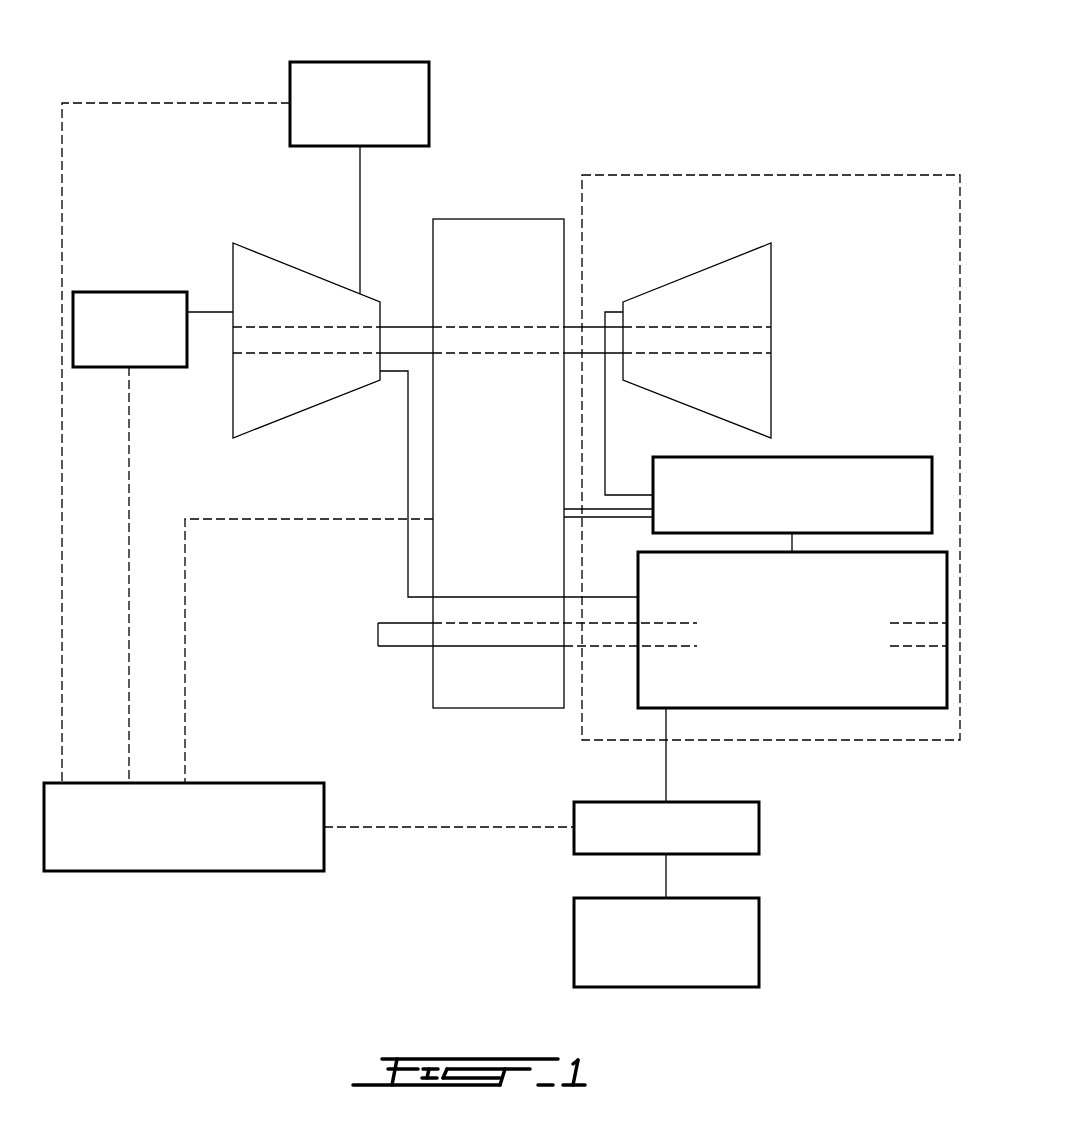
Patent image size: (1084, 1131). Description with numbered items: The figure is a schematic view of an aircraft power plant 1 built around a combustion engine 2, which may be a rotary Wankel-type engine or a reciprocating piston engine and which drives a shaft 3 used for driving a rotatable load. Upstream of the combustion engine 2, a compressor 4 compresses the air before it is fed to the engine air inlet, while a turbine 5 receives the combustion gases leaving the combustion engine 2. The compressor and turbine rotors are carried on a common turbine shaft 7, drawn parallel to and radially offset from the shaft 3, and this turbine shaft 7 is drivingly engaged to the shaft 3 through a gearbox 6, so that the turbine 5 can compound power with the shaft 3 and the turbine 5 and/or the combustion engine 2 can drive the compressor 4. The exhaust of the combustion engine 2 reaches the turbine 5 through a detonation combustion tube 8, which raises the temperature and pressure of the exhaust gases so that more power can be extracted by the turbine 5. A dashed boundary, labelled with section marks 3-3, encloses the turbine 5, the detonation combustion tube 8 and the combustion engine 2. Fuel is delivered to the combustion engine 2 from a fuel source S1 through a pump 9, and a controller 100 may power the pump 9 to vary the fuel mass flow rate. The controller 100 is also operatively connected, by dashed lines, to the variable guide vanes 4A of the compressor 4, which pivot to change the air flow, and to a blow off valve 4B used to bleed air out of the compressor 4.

The aircraft power plant 1 is at (660, 104).
The combustion engine 2 is at (792, 710).
The shaft 3 is at (398, 648).
The engine assembly boundary 3-3 is at (838, 175).
The compressor 4 is at (290, 266).
The variable guide vanes (VGVs) 4A is at (130, 292).
The blow off valve 4B is at (430, 104).
The turbine 5 is at (697, 270).
The gearbox 6 is at (433, 553).
The turbine shaft 7 is at (496, 356).
The detonation combustion tube 8 is at (866, 457).
The pump 9 is at (760, 827).
The fuel source S1 is at (760, 945).
The controller 100 is at (185, 873).